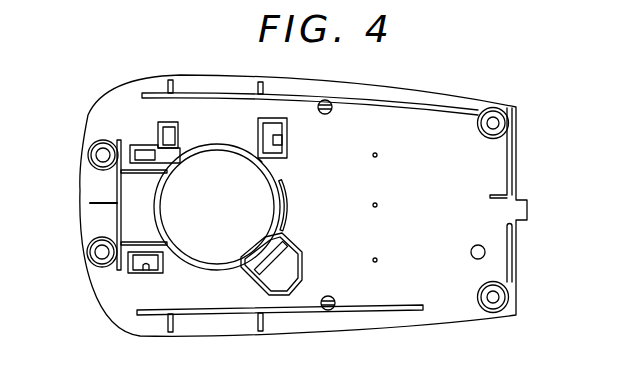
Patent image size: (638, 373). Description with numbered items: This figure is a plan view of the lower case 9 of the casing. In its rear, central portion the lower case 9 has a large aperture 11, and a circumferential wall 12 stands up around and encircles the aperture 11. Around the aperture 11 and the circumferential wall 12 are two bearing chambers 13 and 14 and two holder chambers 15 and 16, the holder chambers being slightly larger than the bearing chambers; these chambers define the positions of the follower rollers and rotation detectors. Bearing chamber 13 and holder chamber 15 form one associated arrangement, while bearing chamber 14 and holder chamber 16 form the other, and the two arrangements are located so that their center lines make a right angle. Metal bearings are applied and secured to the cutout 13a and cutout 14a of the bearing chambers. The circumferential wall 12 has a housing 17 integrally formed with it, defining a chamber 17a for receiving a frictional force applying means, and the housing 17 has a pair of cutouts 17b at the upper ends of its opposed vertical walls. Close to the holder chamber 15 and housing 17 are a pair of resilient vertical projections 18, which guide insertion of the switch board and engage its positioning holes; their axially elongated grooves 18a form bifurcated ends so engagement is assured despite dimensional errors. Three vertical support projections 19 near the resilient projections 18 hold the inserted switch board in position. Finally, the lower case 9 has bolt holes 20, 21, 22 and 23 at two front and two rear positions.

The lower case 9 is at (516, 105).
The aperture 11 is at (196, 252).
The circumferential wall 12 is at (203, 147).
The bearing chamber 13 is at (150, 148).
The cutout 13a is at (168, 128).
The bearing chamber 14 is at (137, 147).
The cutout 14a is at (138, 152).
The holder chamber 15 is at (261, 120).
The holder chamber 16 is at (125, 268).
The housing 17 is at (303, 265).
The chamber 17a is at (270, 282).
The cutouts 17b is at (285, 239).
The resilient vertical projections 18 is at (333, 98).
The axially elongated grooves 18a is at (325, 100).
The vertical support projections 19 is at (378, 155).
The bolt hole 20 is at (492, 115).
The bolt hole 21 is at (493, 303).
The bolt hole 22 is at (95, 153).
The bolt hole 23 is at (96, 250).